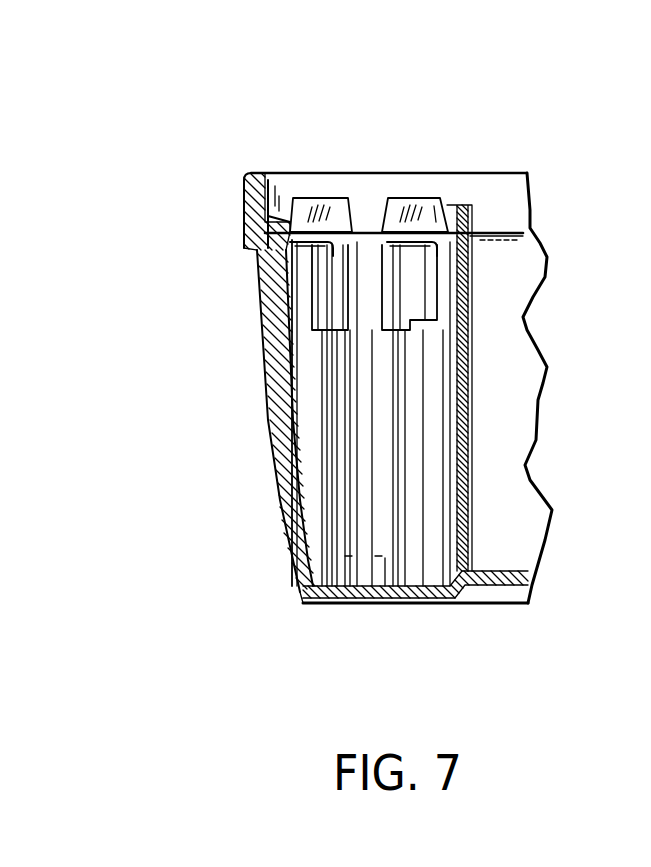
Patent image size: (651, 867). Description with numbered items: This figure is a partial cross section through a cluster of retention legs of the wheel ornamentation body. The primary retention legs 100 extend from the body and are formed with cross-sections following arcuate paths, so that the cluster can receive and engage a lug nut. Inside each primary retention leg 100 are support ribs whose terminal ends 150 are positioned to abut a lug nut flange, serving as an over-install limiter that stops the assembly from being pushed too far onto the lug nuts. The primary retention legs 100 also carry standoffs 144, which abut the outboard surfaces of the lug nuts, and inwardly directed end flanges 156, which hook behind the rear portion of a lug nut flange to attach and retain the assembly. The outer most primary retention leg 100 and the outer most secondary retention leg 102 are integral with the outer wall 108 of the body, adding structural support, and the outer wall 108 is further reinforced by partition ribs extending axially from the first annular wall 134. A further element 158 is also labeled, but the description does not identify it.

The primary retention legs 100 is at (313, 204).
The secondary retention leg 102 is at (258, 222).
The outer wall 108 is at (280, 480).
The first annular wall 134 is at (303, 605).
The standoffs 144 is at (337, 326).
The terminal end 150 is at (330, 243).
The end flanges 156 is at (468, 203).
The outlet channel 158 is at (390, 605).